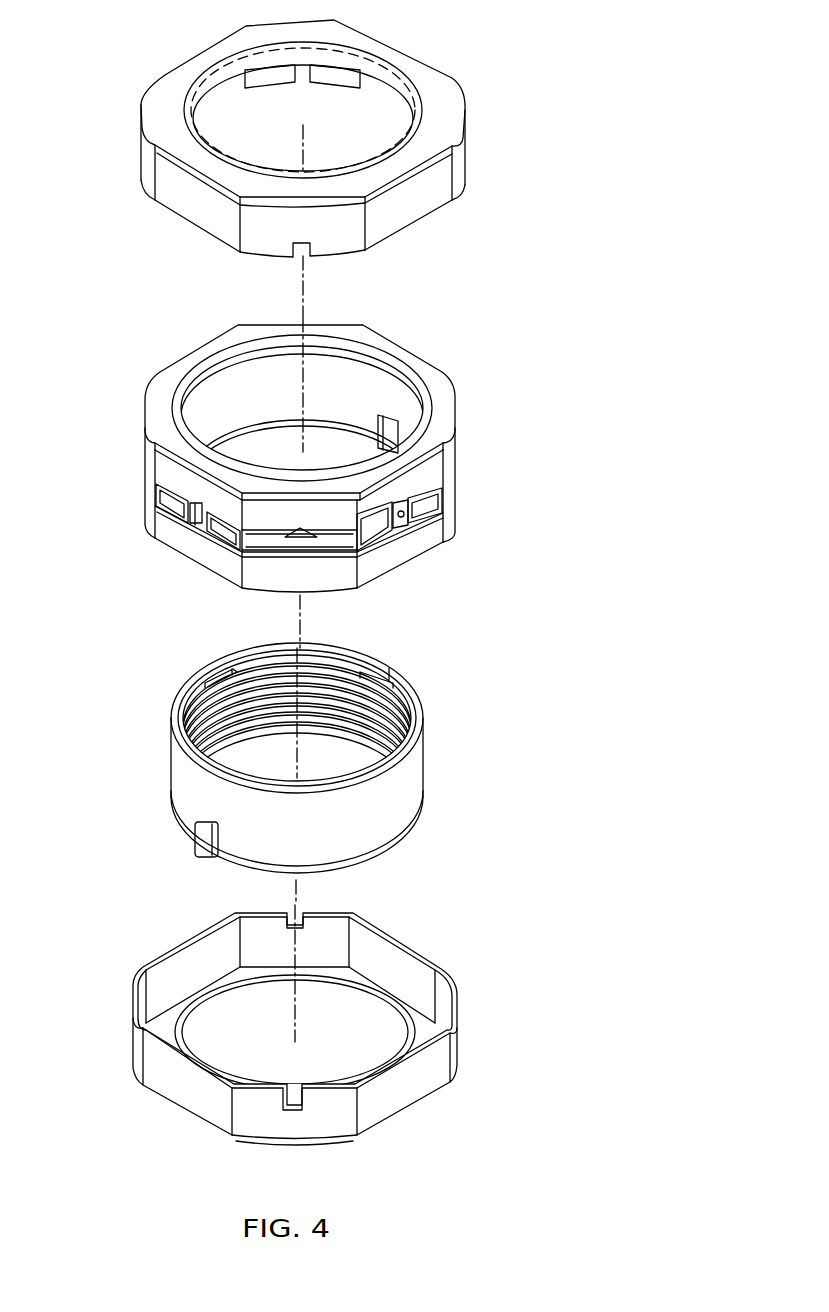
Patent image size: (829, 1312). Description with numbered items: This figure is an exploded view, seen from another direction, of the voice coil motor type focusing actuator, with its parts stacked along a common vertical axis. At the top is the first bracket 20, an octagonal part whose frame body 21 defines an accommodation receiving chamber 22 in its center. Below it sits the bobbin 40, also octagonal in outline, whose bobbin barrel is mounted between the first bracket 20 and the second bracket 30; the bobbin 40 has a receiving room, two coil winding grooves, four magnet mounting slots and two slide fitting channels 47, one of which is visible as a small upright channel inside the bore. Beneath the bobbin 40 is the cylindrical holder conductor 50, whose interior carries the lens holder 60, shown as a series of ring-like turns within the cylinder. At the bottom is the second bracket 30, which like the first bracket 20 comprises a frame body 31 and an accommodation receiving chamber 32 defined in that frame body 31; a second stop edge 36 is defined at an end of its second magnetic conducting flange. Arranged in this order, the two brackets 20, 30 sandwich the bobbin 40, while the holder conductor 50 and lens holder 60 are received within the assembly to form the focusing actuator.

The first bracket 20 is at (142, 128).
The frame body 21 is at (417, 203).
The accommodation receiving chamber 22 is at (375, 108).
The second bracket 30 is at (422, 1108).
The frame body 31 is at (188, 1090).
The accommodation receiving chamber 32 is at (357, 1018).
The second stop edge 36 is at (200, 995).
The bobbin 40 is at (145, 400).
The slide fitting channel 47 is at (390, 430).
The holder conductor 50 is at (423, 763).
The lens holder 60 is at (223, 717).